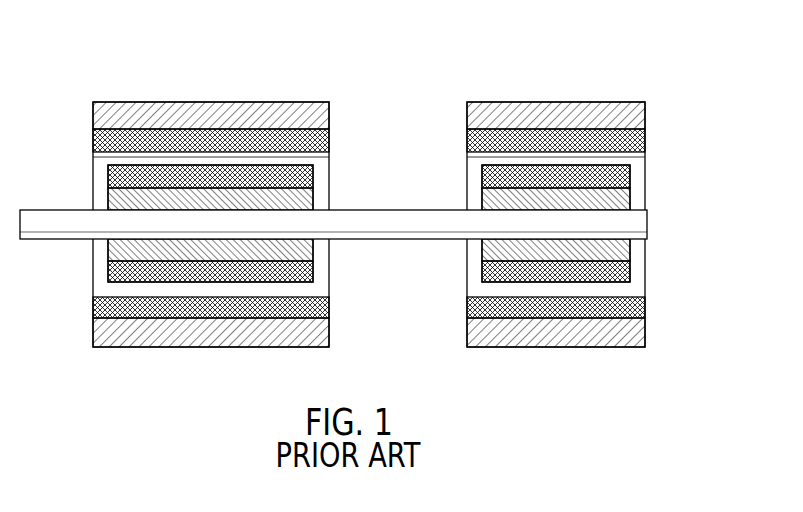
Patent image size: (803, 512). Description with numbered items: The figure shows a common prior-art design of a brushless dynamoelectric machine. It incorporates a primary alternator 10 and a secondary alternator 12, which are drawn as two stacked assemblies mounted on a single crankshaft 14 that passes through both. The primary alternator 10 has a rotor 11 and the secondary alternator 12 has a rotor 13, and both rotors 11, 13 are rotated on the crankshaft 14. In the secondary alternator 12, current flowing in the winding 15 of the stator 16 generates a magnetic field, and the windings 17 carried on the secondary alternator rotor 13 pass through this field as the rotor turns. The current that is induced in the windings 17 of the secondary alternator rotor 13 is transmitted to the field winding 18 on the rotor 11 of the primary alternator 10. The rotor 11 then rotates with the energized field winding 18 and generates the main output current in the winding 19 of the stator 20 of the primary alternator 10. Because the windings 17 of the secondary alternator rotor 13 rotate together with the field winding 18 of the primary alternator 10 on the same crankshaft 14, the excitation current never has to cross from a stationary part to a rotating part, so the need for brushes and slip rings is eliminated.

The primary alternator 10 is at (205, 192).
The secondary alternator 12 is at (582, 190).
The crankshaft 14 is at (372, 215).
The rotor 11 is at (108, 250).
The rotor 13 is at (620, 250).
The winding 15 is at (632, 307).
The stator 16 is at (635, 116).
The windings 17 is at (620, 273).
The field winding 18 is at (305, 271).
The winding 19 is at (95, 141).
The stator 20 is at (105, 330).